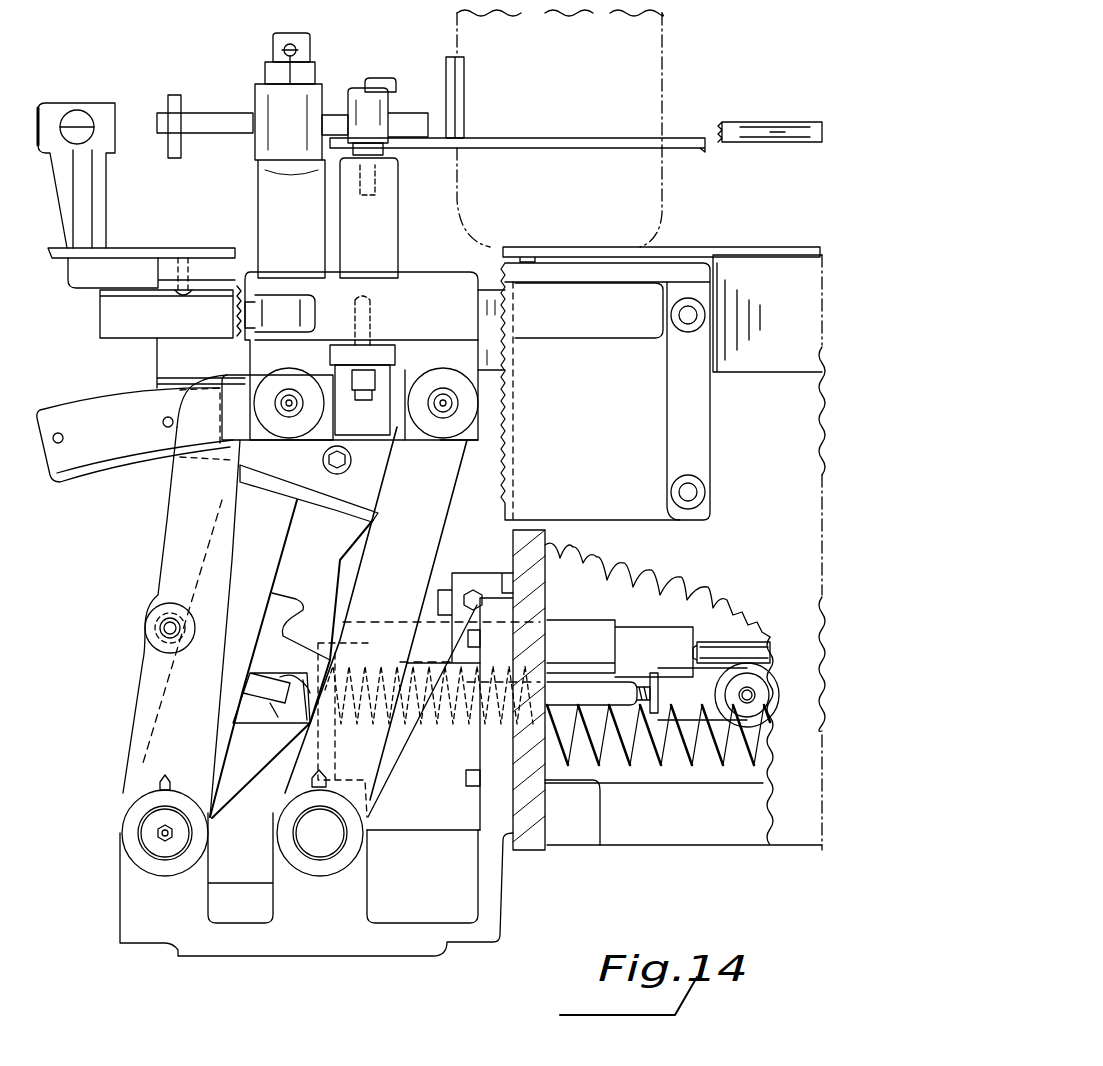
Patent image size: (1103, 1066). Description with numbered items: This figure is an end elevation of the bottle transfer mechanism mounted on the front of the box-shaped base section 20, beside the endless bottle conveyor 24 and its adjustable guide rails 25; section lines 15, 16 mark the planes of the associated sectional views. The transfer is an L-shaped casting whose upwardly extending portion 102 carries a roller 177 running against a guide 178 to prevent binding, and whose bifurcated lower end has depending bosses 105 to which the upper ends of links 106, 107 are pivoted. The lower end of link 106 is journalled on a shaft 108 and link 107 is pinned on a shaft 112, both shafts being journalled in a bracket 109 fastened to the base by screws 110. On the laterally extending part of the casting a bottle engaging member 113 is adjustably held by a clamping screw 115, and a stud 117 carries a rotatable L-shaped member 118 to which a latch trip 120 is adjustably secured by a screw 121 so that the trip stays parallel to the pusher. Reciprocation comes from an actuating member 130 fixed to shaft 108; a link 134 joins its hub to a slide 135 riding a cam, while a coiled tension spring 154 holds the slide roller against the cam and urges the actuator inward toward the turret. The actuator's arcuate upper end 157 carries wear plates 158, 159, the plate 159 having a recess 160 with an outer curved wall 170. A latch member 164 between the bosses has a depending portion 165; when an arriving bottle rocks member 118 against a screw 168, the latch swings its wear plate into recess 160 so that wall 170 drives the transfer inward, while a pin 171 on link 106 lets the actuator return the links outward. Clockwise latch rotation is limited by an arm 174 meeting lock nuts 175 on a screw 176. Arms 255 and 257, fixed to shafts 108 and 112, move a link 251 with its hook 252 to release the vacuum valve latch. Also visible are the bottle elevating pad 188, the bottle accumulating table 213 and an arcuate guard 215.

The section line 15- 15 is at (37, 22).
The section line 16- 16 is at (258, 22).
The base section 20 is at (652, 552).
The endless bottle conveyor 24 is at (160, 352).
The adjustable guide rails 25 is at (181, 100).
The upwardly extending portion 102 is at (256, 220).
The depending bosses 105 is at (300, 355).
The link 106 is at (181, 596).
The link 107 is at (376, 622).
The shaft 108 is at (145, 833).
The bracket 109 is at (316, 884).
The screws 110 is at (466, 783).
The shaft 112 is at (320, 823).
The bottle engaging member 113 is at (464, 95).
The clamping screw 115 is at (273, 44).
The stud 117 is at (265, 74).
The L-shaped member 118 is at (325, 110).
The latch trip 120 is at (585, 137).
The screw 121 is at (392, 78).
The actuating member 130 is at (291, 659).
The link 134 is at (598, 693).
The slide 135 is at (722, 687).
The coiled tension spring 154 is at (628, 768).
The upper end of the actuator 157 is at (135, 470).
The wear plate 158 is at (133, 435).
The wear plate 159 is at (277, 415).
The recess 160 is at (309, 493).
The latch member 164 is at (398, 222).
The depending portion 165 is at (410, 432).
The screw 168 is at (388, 100).
The outer curved wall 170 is at (350, 445).
The laterally extending pin 171 is at (160, 633).
The arm 174 is at (363, 356).
The lock nuts 175 is at (380, 385).
The screw 176 is at (375, 335).
The roller 177 is at (300, 303).
The guide 178 is at (166, 314).
The bottle elevating pad 188 is at (661, 387).
The bottle accumulating table 213 is at (640, 247).
The arcuate guard 215 is at (735, 122).
The link 251 is at (745, 638).
The hook portion 252 is at (330, 658).
The arm 255 is at (300, 590).
The arm 257 is at (429, 706).